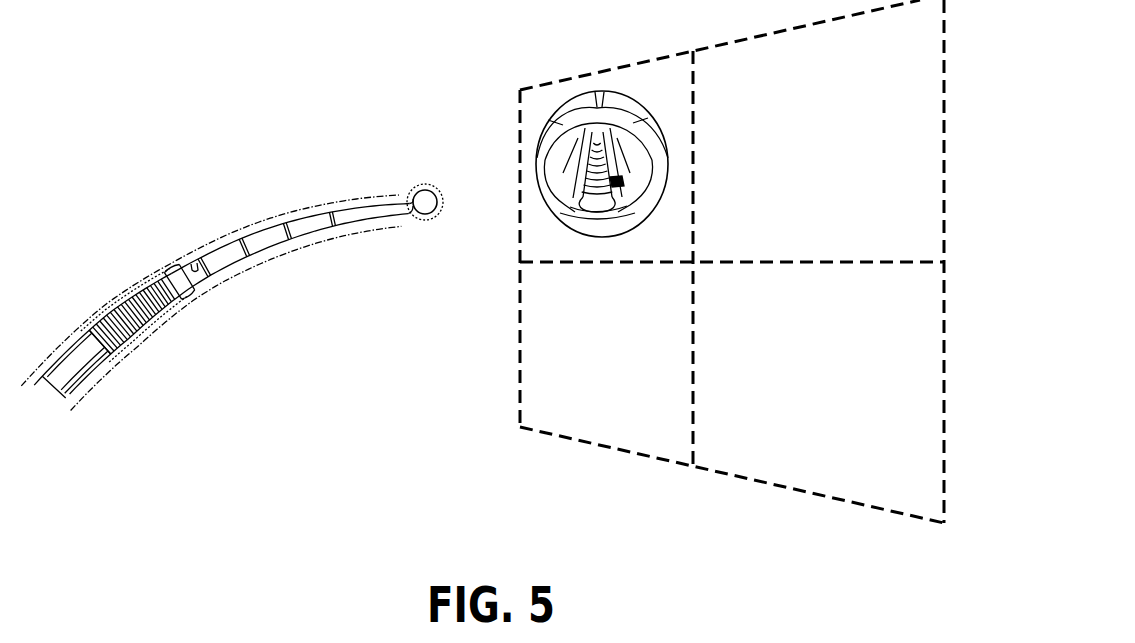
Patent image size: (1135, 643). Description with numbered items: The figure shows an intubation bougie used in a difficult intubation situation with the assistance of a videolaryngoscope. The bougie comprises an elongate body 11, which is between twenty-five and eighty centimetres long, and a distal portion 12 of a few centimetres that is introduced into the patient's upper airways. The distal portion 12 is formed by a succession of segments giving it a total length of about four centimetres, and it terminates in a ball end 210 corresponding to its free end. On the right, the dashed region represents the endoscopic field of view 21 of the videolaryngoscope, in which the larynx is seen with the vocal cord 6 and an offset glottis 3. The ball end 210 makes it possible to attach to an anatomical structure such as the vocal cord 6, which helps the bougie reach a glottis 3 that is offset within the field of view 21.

The glottis 3 is at (613, 179).
The vocal cord 6 is at (610, 157).
The body 11 is at (140, 357).
The distal portion 12 is at (288, 256).
The endoscopic field of view 21 is at (558, 437).
The ball end 210 is at (415, 178).